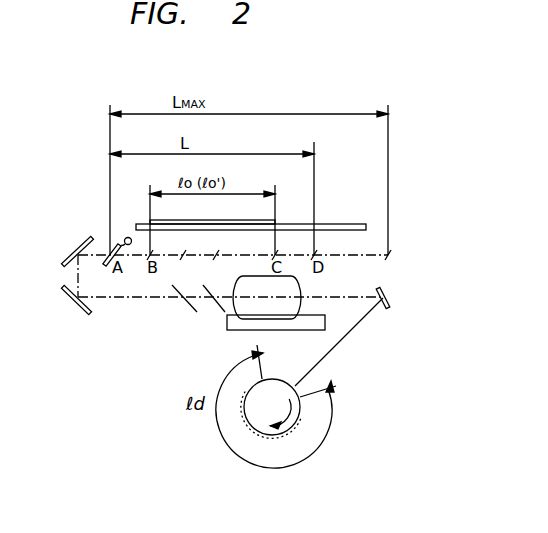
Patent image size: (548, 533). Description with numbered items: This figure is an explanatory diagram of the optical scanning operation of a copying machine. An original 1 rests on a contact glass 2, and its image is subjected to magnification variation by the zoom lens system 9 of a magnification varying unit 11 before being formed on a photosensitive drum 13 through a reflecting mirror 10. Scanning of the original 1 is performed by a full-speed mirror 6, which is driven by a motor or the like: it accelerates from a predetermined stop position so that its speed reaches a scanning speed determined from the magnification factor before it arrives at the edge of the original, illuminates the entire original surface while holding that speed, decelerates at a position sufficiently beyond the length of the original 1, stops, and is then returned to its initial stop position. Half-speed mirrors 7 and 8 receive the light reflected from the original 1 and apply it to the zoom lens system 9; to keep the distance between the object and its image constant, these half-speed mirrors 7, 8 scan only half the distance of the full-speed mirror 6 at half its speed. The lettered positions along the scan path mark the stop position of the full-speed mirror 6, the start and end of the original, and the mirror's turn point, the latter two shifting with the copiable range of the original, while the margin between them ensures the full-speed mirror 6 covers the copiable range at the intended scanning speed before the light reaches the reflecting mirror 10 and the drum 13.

The original 1 is at (266, 220).
The contact glass 2 is at (338, 224).
The full-speed mirror 6 is at (110, 249).
The half-speed mirror 7 is at (74, 250).
The half-speed mirror 8 is at (72, 300).
The zoom lens system 9 is at (300, 289).
The reflecting mirror 10 is at (390, 291).
The magnification varying unit 11 is at (327, 321).
The photosensitive drum 13 is at (304, 395).